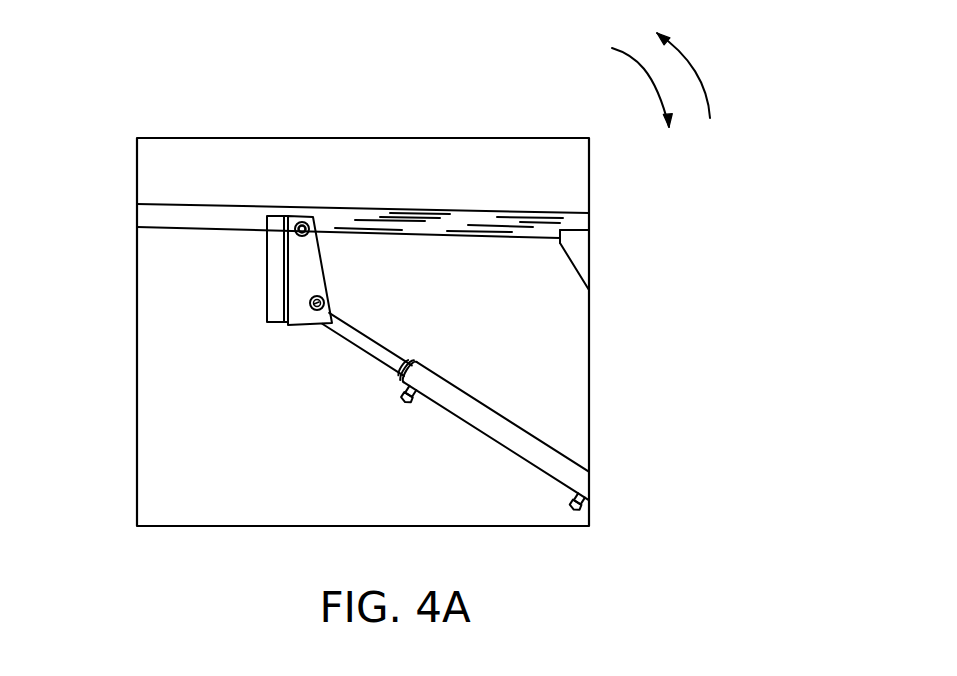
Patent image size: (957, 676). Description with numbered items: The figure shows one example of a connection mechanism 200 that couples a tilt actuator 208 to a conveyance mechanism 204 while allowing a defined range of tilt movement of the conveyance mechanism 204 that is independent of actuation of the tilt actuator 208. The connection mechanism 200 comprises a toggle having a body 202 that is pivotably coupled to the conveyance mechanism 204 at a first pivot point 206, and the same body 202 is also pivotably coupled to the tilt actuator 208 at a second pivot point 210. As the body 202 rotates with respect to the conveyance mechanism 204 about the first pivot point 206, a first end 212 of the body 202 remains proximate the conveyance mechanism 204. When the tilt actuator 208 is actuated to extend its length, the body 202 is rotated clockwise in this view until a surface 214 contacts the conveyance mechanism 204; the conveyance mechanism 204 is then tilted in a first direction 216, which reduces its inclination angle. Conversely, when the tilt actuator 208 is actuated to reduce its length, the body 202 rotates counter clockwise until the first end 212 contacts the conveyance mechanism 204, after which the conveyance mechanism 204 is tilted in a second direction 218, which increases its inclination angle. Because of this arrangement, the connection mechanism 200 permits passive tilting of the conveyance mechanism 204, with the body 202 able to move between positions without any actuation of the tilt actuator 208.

The connection mechanism 200 is at (248, 375).
The body 202 is at (282, 312).
The conveyance mechanism 204 is at (395, 167).
The first pivot point 206 is at (302, 213).
The tilt actuator 208 is at (525, 432).
The second pivot point 210 is at (324, 300).
The first end 212 is at (270, 213).
The surface 214 is at (273, 277).
The first direction 216 is at (655, 85).
The second direction 218 is at (697, 63).